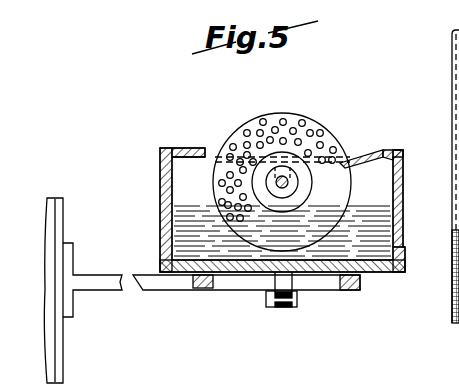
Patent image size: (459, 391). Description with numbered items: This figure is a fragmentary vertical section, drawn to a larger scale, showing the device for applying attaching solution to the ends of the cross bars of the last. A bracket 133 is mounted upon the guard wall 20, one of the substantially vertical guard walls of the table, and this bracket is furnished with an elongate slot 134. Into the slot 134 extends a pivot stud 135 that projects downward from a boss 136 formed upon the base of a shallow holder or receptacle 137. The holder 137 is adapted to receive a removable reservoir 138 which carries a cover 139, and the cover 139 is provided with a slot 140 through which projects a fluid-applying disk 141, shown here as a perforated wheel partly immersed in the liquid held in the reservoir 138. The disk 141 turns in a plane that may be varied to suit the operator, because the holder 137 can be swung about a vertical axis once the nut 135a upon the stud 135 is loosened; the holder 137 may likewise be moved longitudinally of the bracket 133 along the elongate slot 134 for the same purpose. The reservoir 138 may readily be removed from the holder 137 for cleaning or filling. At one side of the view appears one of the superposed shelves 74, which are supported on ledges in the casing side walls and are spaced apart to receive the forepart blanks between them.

The fluid-applying disk 141 is at (272, 118).
The slot 140 is at (350, 160).
The cover 139 is at (385, 150).
The removable reservoir 138 is at (398, 190).
The holder 137 is at (405, 256).
The boss 136 is at (258, 282).
The pivot stud 135 is at (276, 306).
The nut 135a is at (300, 302).
The elongate slot 134 is at (332, 281).
The bracket 133 is at (97, 278).
The guard wall 20 is at (70, 357).
The shelf 74 is at (458, 16).